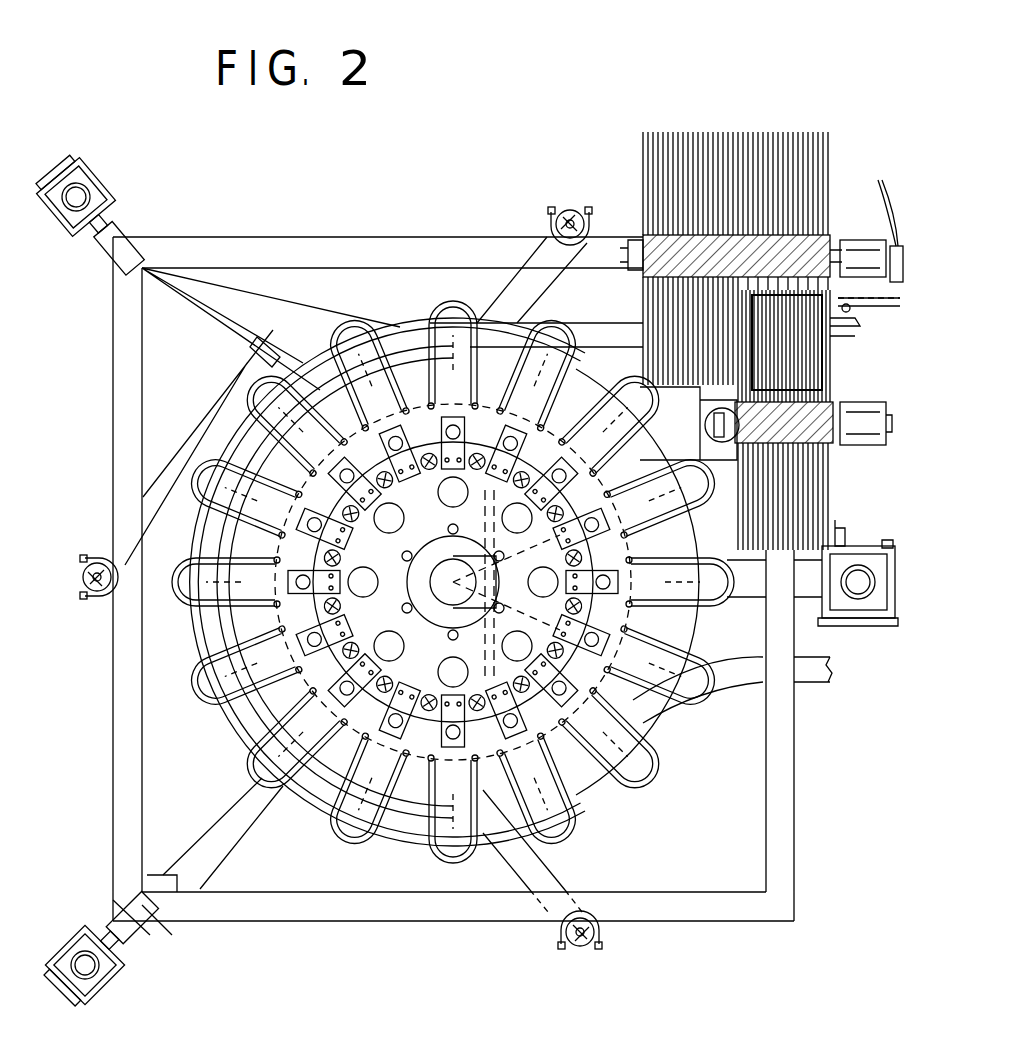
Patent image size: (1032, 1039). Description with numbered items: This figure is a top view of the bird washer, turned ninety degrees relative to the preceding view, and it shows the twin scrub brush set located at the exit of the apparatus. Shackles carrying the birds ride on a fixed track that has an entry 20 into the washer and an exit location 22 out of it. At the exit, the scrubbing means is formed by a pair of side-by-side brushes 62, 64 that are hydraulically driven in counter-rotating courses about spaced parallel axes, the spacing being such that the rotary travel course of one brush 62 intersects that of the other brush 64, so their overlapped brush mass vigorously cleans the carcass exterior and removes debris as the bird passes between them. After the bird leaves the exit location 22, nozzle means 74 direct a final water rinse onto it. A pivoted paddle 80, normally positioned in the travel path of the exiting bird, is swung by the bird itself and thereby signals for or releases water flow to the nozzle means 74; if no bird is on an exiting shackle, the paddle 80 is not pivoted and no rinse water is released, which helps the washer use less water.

The entry 20 is at (828, 692).
The exit location 22 is at (848, 332).
The brush 62 is at (830, 500).
The brush 64 is at (745, 132).
The nozzle means 74 is at (878, 242).
The pivoted paddle 80 is at (838, 372).